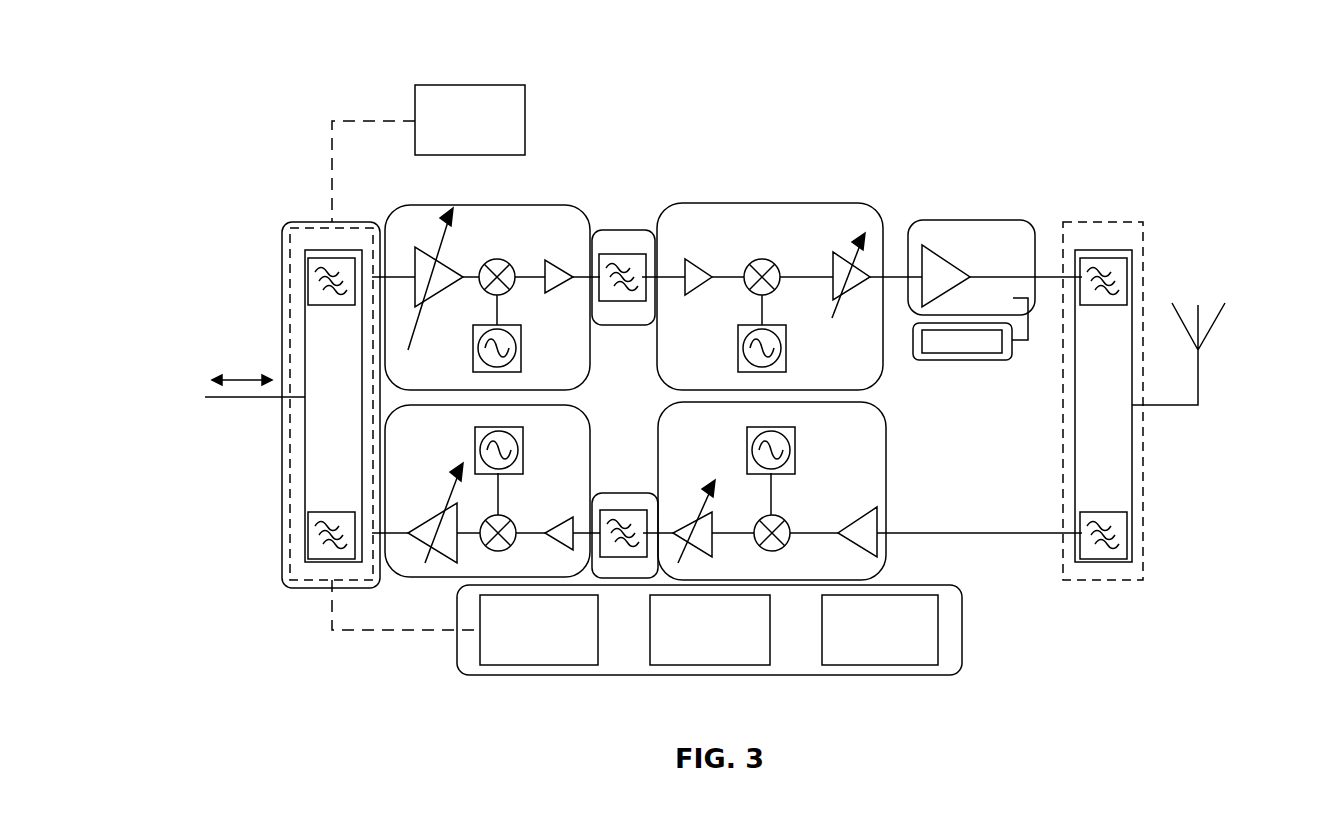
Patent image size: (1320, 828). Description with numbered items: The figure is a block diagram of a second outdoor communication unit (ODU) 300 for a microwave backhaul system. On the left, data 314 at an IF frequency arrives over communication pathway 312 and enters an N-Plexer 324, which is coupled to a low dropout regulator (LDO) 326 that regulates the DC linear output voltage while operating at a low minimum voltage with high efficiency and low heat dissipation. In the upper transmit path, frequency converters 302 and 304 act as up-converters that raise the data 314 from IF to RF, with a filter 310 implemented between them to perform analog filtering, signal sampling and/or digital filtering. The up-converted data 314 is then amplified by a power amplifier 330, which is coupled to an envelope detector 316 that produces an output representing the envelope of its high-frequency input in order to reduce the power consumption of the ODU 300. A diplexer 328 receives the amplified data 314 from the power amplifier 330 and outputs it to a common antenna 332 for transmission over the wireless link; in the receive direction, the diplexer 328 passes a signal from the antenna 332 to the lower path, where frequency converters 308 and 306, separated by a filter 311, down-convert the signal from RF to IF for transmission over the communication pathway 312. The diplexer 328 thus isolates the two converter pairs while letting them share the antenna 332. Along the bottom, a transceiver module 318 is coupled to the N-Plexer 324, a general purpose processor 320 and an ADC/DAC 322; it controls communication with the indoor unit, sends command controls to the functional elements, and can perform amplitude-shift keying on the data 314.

The outdoor communication unit 300 is at (238, 52).
The frequency converter 302 is at (487, 297).
The frequency converter 304 is at (770, 296).
The frequency converter 306 is at (487, 491).
The frequency converter 308 is at (772, 491).
The filter 310 is at (620, 230).
The filter 311 is at (612, 493).
The communication pathway 312 is at (223, 398).
The data 314 is at (242, 367).
The envelope detector 316 is at (960, 360).
The transceiver module 318 is at (539, 630).
The general purpose processor 320 is at (770, 634).
The general purpose analog-to-digital converter 322 is at (940, 634).
The N-Plexer 324 is at (287, 222).
The low dropout regulator 326 is at (428, 357).
The diplexer 328 is at (1128, 222).
The power amplifier 330 is at (973, 220).
The antenna 332 is at (1198, 290).